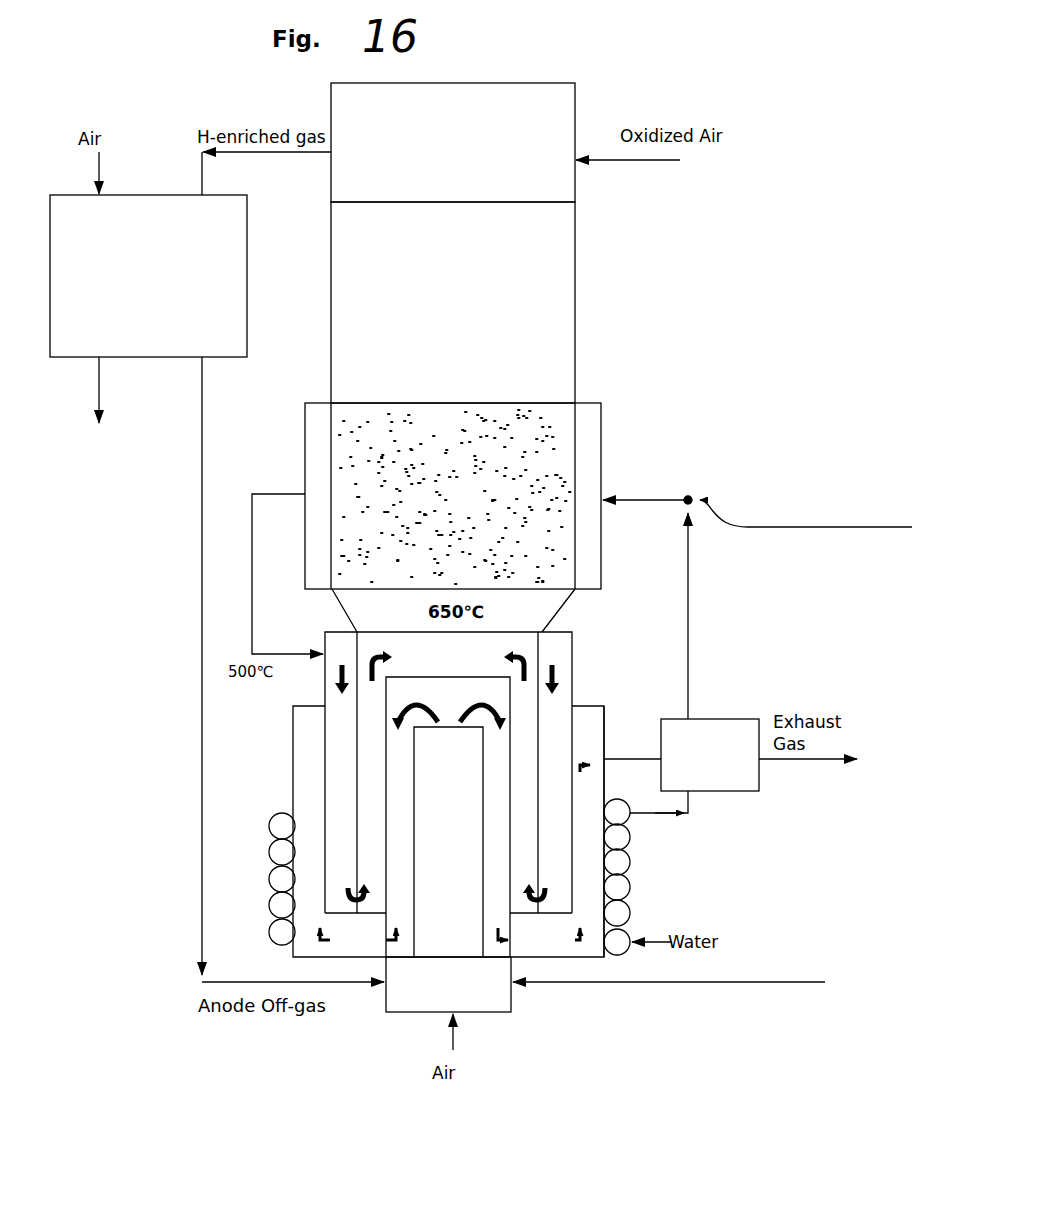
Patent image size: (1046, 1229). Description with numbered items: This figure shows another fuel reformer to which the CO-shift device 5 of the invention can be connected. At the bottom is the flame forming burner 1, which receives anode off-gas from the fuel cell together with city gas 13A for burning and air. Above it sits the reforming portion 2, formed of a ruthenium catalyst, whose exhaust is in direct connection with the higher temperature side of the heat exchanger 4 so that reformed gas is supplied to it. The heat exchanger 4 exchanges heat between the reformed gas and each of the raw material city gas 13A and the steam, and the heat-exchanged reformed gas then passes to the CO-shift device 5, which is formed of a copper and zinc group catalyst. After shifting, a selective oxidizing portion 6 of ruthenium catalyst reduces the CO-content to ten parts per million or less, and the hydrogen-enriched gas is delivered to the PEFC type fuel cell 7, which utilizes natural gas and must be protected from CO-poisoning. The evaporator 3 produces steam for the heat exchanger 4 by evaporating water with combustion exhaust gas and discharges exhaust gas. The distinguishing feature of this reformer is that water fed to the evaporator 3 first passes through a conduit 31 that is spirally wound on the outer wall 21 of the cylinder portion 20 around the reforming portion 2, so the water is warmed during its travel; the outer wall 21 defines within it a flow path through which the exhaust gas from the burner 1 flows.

The flame forming burner 1 is at (407, 995).
The reforming portion 2 is at (598, 634).
The evaporator 3 is at (725, 719).
The heat exchanger 4 is at (602, 437).
The CO-shift device 5 is at (576, 286).
The selective oxidizing portion 6 is at (576, 105).
The PEFC type fuel cell 7 is at (172, 276).
The city gas 13A is at (757, 591).
The cylinder portion 20 is at (557, 957).
The outer wall 21 is at (605, 777).
The conduit 31 is at (630, 862).